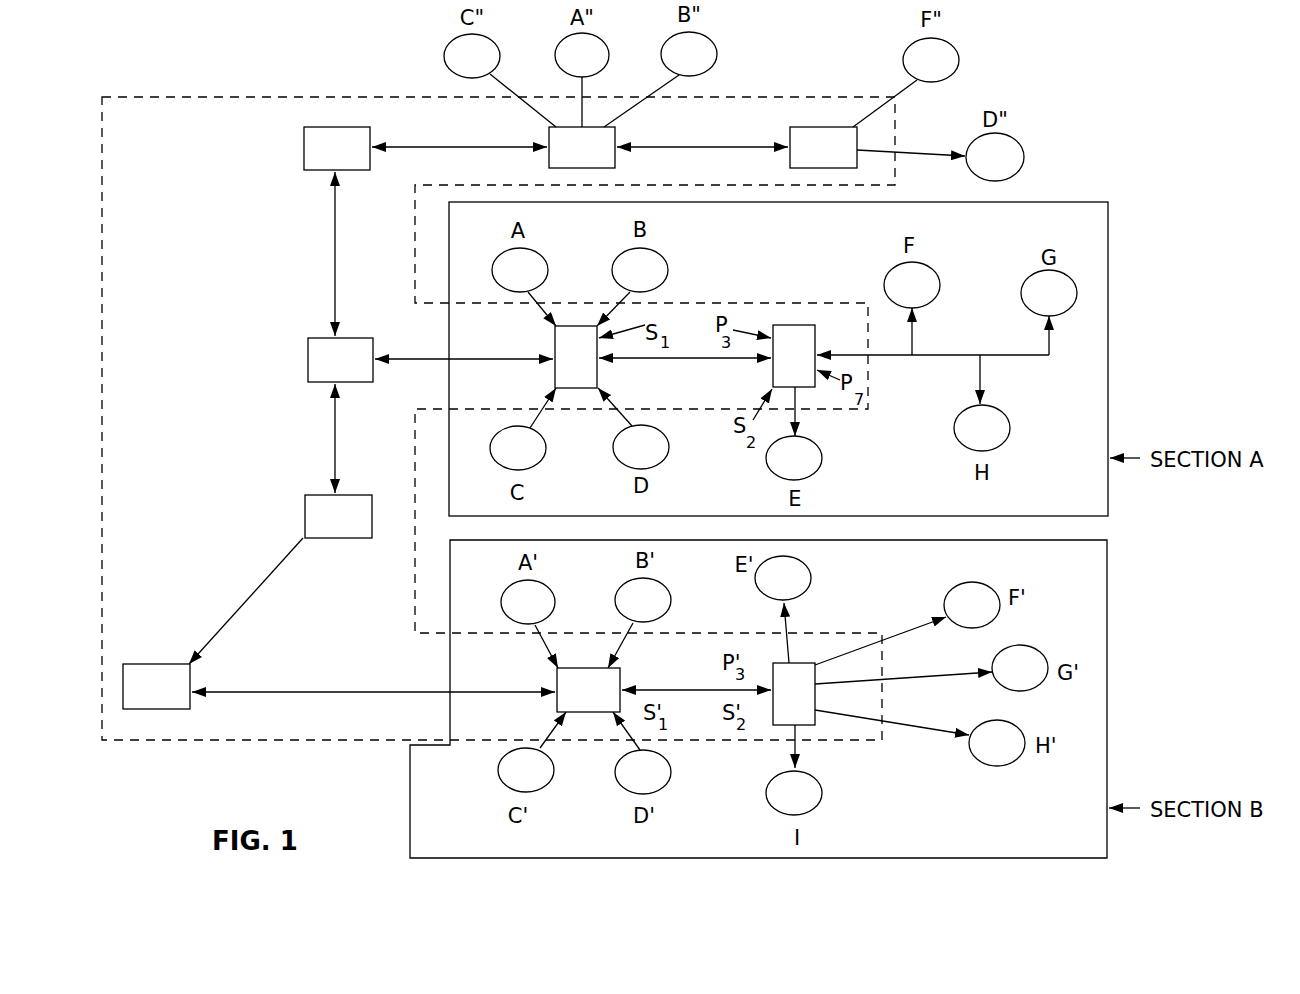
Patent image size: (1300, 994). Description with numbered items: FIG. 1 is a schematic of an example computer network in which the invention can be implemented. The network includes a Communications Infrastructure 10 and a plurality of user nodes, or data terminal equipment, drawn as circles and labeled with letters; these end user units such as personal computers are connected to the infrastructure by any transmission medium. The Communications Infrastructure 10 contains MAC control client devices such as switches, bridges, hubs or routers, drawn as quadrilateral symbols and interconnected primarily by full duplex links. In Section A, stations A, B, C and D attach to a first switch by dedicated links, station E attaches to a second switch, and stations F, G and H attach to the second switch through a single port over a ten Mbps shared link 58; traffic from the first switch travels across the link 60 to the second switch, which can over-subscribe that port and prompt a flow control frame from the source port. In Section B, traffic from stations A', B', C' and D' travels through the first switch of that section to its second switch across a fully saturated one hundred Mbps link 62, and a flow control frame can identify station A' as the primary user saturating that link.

The communications infrastructure 10 is at (287, 96).
The shared link 58 is at (1018, 358).
The link 60 is at (682, 360).
The link 62 is at (678, 688).